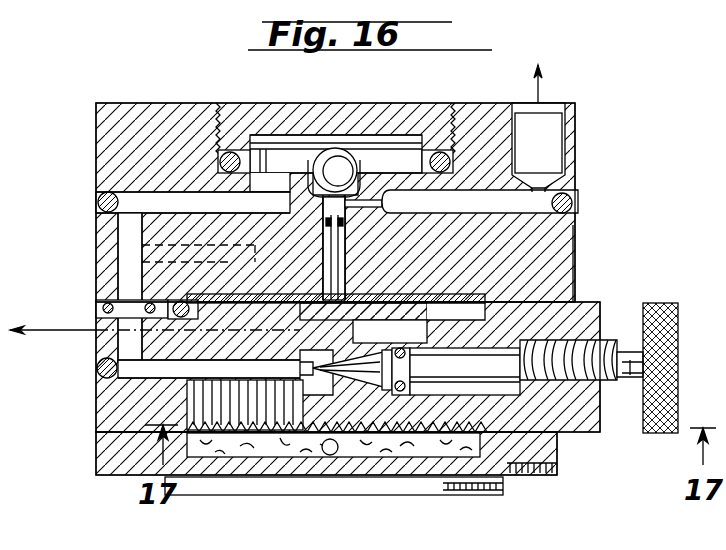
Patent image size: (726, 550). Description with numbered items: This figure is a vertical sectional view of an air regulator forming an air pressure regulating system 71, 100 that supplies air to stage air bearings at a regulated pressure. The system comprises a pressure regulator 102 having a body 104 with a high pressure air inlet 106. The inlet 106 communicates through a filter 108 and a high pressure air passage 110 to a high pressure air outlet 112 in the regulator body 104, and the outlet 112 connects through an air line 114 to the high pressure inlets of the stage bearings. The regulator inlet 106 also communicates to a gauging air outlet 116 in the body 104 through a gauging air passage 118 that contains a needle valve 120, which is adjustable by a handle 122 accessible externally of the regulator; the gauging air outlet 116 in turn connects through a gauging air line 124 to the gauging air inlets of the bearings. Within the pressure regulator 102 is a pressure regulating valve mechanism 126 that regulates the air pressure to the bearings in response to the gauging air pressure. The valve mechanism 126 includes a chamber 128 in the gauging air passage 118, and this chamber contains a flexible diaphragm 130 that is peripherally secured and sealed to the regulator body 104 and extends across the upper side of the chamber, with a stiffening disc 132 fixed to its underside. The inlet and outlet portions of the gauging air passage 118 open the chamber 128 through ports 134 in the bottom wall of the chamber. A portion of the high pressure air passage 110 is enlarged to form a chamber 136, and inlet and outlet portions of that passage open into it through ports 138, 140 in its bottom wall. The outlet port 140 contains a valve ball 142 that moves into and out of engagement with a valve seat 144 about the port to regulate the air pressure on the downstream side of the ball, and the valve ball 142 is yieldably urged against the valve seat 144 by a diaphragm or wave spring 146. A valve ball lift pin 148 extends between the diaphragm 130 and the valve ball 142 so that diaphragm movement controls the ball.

The air pressure regulating system 71 is at (650, 120).
The air pressure regulating system 100 is at (94, 150).
The pressure regulator 102 is at (576, 262).
The regulator body 104 is at (563, 290).
The high pressure air inlet 106 is at (272, 485).
The filter 108 is at (410, 440).
The high pressure air passage 110 is at (118, 364).
The high pressure air outlet 112 is at (553, 155).
The air line 114 is at (541, 90).
The gauging air outlet 116 is at (100, 322).
The gauging air passage 118 is at (372, 392).
The needle valve 120 is at (318, 369).
The handle 122 is at (668, 300).
The gauging air line 124 is at (72, 332).
The pressure regulating valve mechanism 126 is at (262, 350).
The chamber 128 is at (424, 325).
The flexible diaphragm 130 is at (400, 242).
The stiffening disc 132 is at (450, 234).
The ports 134 is at (350, 340).
The chamber 136 is at (272, 155).
The inlet port 138 is at (322, 160).
The outlet port 140 is at (352, 170).
The valve ball 142 is at (340, 150).
The valve seat 144 is at (288, 180).
The wave spring 146 is at (440, 150).
The valve ball lift pin 148 is at (193, 204).